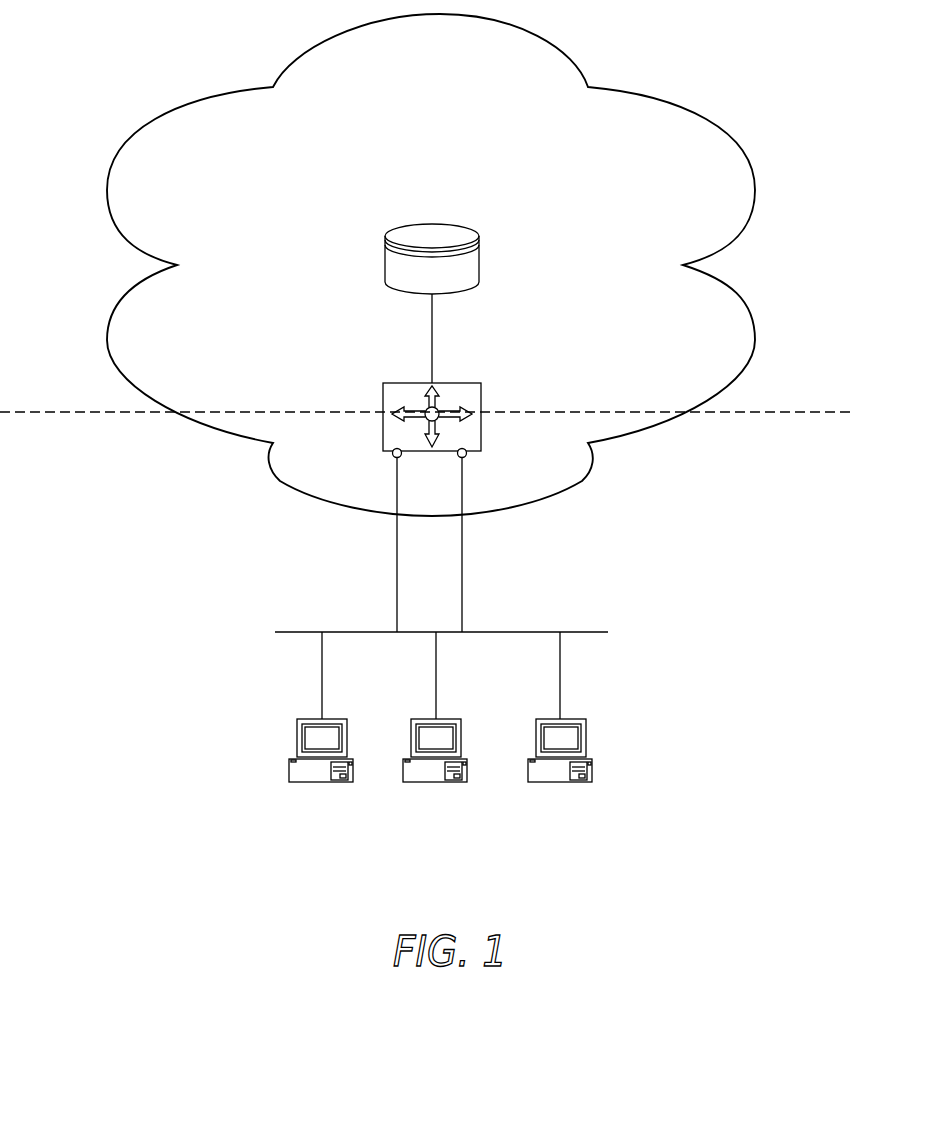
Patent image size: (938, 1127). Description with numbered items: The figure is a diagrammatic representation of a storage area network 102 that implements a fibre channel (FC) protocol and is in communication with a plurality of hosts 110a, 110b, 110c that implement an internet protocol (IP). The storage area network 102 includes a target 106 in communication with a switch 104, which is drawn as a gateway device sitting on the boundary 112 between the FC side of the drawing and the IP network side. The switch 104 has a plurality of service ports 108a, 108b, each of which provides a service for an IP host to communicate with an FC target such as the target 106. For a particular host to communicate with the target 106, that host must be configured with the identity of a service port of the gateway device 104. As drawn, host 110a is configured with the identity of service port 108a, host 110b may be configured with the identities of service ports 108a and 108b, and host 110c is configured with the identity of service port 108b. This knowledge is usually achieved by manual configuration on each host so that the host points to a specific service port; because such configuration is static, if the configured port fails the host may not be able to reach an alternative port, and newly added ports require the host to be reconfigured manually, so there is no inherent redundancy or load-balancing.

The storage area network 102 is at (327, 28).
The switch 104 is at (383, 382).
The target 106 is at (482, 263).
The service port 108a is at (393, 455).
The service port 108b is at (466, 455).
The host 110a is at (291, 759).
The host 110b is at (406, 760).
The host 110c is at (530, 760).
The FC / IP network boundary 112 is at (225, 413).